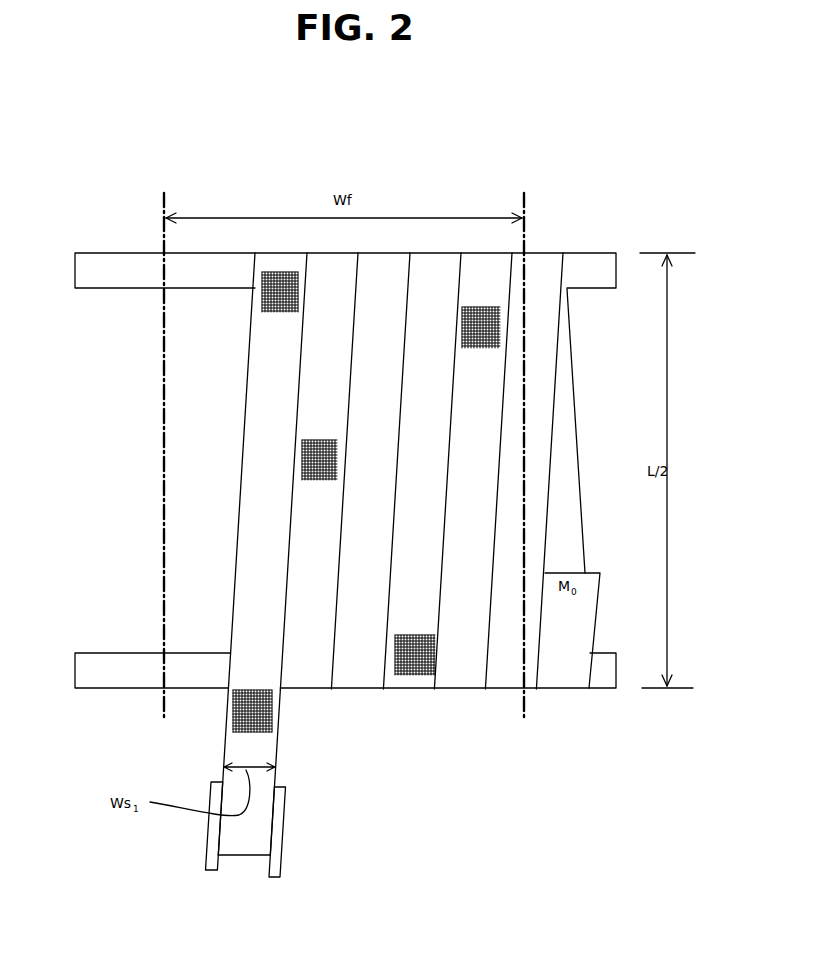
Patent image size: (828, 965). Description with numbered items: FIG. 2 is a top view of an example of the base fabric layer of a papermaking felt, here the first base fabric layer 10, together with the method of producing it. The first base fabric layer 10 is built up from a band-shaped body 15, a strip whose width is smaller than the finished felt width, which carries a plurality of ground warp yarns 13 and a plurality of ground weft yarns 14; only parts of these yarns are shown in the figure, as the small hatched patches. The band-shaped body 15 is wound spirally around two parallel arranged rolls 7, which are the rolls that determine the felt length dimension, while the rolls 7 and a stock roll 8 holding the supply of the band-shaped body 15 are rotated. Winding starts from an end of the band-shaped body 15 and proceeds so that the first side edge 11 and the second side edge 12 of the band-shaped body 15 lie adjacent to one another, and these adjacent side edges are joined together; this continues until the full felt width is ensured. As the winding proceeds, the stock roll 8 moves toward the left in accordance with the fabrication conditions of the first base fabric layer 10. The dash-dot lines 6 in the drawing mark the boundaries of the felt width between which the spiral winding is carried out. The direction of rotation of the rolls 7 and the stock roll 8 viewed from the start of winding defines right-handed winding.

The fold line 6 is at (163, 196).
The rolls 7 is at (95, 275).
The stock roll 8 is at (285, 822).
The first base fabric layer 10 is at (582, 202).
The first side edge 11 is at (280, 713).
The second side edge 12 is at (227, 712).
The ground warp yarns 13 is at (398, 672).
The ground weft yarns 14 is at (437, 665).
The band-shaped body 15 is at (243, 648).